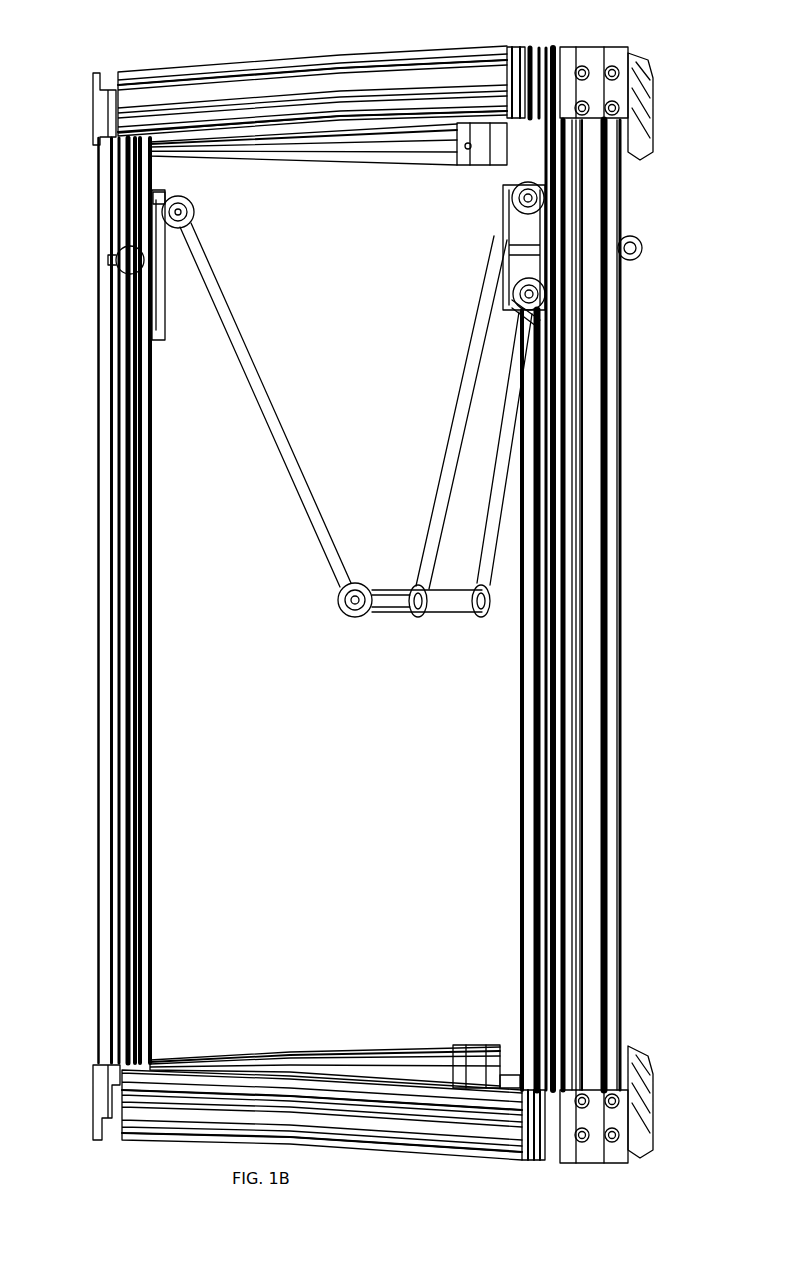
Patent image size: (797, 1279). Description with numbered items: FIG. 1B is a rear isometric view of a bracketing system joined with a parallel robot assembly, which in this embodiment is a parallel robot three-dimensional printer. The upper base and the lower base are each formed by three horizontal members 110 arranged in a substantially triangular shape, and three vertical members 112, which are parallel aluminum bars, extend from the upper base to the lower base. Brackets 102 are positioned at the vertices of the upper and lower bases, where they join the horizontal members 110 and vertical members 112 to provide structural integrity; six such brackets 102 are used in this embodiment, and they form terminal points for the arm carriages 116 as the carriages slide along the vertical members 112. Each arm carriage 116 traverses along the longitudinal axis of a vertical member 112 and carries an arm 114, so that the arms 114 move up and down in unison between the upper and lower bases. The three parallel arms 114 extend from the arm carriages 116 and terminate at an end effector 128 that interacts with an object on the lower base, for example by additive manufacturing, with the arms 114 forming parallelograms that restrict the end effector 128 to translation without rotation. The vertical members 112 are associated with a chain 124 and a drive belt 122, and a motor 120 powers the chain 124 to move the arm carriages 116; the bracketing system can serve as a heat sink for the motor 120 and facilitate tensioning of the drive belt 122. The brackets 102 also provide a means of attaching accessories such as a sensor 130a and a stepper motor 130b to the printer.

The bracket 102 is at (93, 119).
The horizontal member 110 is at (251, 70).
The vertical member 112 is at (100, 415).
The arm 114 is at (296, 472).
The arm carriage 116 is at (160, 340).
The motor 120 is at (485, 1048).
The drive belt 122 is at (524, 318).
The chain 124 is at (540, 666).
The end effector 128 is at (365, 621).
The sensor 130a is at (507, 123).
The stepper motor 130b is at (497, 1087).